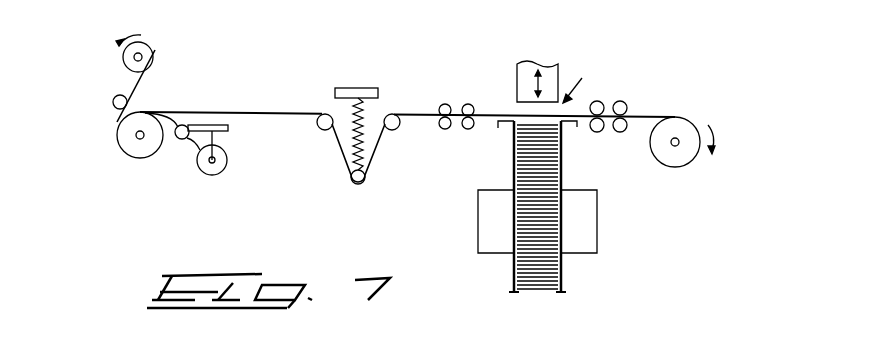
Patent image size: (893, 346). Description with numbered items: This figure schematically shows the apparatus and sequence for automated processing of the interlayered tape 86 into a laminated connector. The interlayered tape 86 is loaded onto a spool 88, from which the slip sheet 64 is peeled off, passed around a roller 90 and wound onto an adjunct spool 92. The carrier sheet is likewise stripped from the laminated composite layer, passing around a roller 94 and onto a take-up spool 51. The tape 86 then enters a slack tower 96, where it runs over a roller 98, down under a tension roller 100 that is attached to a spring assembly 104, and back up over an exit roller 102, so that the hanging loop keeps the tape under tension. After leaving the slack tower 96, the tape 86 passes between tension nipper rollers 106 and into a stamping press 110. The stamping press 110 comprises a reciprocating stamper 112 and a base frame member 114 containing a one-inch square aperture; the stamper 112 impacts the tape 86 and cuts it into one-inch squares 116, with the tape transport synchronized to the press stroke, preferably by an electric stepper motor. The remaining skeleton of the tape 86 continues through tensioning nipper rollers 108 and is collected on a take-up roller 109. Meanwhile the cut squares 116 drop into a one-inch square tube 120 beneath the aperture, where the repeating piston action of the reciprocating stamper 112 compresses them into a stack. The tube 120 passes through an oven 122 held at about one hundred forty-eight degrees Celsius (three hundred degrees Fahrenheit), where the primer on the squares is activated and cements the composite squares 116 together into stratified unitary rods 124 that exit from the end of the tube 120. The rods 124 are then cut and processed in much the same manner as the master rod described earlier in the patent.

The take-up spool 51 is at (219, 173).
The slip sheet 64 is at (140, 86).
The interlayered tape 86 is at (140, 159).
The spool 88 is at (137, 137).
The roller 90 is at (118, 96).
The adjunct spool 92 is at (140, 56).
The roller 94 is at (188, 120).
The slack tower 96 is at (360, 88).
The roller 98 is at (323, 131).
The tension roller 100 is at (362, 185).
The exit roller 102 is at (394, 131).
The spring assembly 104 is at (370, 114).
The tension nipper rollers 106 is at (467, 102).
The tensioning nipper rollers 108 is at (619, 104).
The take-up roller 109 is at (678, 162).
The stamping press 110 is at (596, 82).
The reciprocating stamper 112 is at (533, 62).
The base frame member 114 is at (500, 127).
The squares 116 is at (541, 162).
The square tube 120 is at (510, 180).
The oven 122 is at (580, 236).
The stratified unitary rods 124 is at (538, 293).